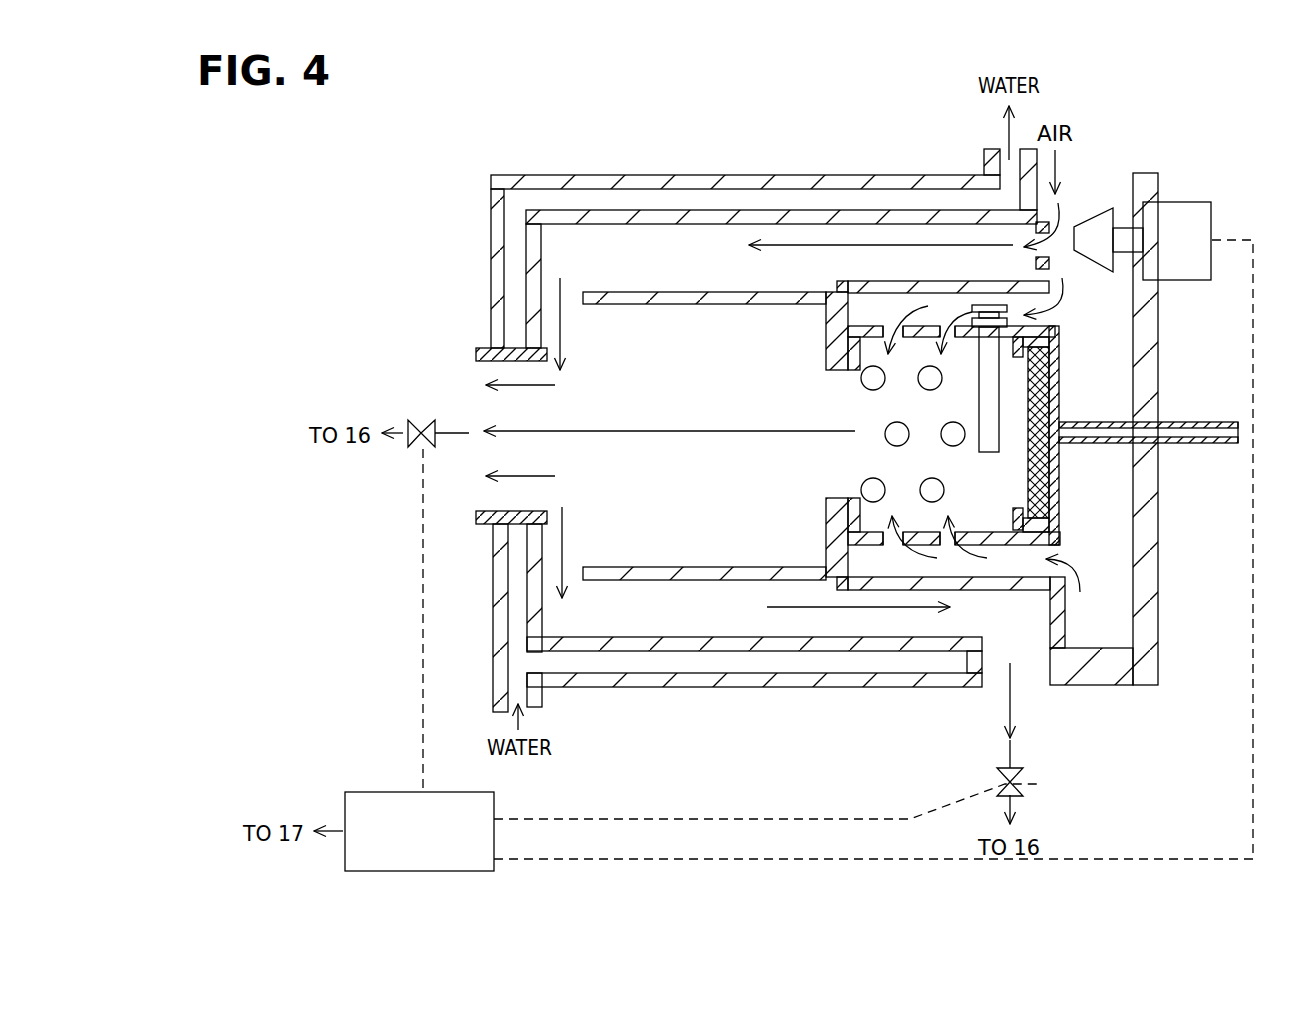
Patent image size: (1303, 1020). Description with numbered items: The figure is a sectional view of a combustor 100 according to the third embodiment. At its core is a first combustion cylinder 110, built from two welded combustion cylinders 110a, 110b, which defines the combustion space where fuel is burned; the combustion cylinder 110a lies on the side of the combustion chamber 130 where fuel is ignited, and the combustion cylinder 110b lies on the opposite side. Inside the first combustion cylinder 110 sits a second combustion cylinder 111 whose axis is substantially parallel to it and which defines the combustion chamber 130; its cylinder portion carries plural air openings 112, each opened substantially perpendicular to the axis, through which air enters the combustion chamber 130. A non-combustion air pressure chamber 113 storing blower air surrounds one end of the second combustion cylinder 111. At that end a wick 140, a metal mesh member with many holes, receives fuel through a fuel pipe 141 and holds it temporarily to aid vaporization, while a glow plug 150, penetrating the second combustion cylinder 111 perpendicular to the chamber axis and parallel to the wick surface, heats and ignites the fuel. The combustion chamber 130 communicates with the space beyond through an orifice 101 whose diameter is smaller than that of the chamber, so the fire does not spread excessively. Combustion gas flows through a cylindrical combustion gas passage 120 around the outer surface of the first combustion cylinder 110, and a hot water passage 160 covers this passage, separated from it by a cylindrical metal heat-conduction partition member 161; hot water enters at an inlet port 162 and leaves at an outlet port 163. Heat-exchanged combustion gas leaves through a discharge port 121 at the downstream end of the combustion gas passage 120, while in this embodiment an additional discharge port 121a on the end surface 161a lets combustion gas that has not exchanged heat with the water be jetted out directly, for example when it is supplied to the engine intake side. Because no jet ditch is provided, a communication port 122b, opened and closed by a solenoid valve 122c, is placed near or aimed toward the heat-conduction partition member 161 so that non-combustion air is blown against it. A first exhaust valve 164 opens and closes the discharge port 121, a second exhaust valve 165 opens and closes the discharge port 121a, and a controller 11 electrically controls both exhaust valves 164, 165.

The combustor 100 is at (484, 117).
The heat-conduction partition member 161 is at (583, 210).
The combustion gas passage 120 is at (662, 250).
The second combustion cylinder 111 is at (860, 303).
The air openings 112 is at (887, 325).
The combustion chamber 130 is at (917, 363).
The hot water passage 160 is at (950, 312).
The outlet port 163 is at (1003, 148).
The solenoid valve 122c is at (1167, 202).
The communication port 122b is at (1042, 249).
The glow plug 150 is at (1000, 386).
The discharge port 121a is at (520, 404).
The second exhaust valve 165 is at (412, 420).
The fuel pipe 141 is at (1183, 443).
The non-combustion air pressure chamber 113 is at (1095, 490).
The wick 140 is at (1042, 505).
The end surface 161a is at (540, 546).
The discharge port 121 is at (1022, 680).
The inlet port 162 is at (528, 707).
The combustion cylinder 110b is at (638, 580).
The first combustion cylinder 110 is at (835, 565).
The orifice 101 is at (845, 466).
The combustion cylinder 110a is at (850, 578).
The first exhaust valve 164 is at (1026, 784).
The controller 11 is at (424, 871).